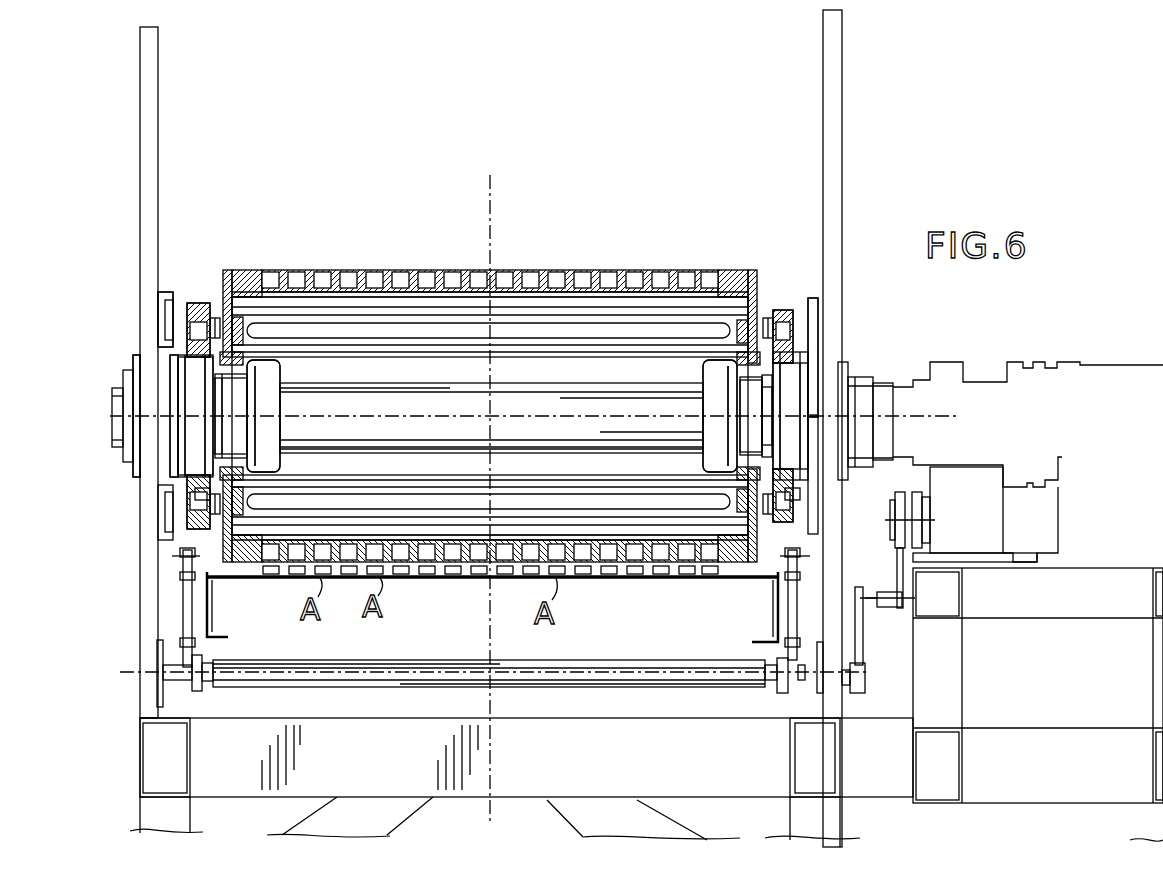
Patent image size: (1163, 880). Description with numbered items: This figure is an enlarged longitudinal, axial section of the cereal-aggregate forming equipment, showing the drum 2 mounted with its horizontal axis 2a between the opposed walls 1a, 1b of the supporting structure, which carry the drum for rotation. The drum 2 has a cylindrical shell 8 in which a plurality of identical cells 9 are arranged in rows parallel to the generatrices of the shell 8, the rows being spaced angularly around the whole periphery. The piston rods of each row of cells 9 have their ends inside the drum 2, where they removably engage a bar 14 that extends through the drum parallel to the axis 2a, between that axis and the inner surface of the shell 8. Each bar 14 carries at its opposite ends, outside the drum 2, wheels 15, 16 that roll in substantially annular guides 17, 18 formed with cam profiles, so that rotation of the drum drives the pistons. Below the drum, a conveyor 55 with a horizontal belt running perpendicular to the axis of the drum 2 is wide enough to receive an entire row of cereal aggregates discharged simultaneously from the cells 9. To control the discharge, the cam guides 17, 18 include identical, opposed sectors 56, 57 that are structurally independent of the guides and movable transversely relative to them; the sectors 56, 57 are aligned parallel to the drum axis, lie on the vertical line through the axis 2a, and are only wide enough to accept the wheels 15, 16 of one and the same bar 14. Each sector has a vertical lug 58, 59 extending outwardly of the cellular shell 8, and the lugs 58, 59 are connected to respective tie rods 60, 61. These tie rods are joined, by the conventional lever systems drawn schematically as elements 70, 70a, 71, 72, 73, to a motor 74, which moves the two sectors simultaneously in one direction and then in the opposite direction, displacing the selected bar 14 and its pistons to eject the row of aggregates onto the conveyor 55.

The opposed wall 1a is at (150, 103).
The opposed wall 1b is at (823, 103).
The drum 2 is at (244, 266).
The horizontal axis 2a is at (540, 418).
The cylindrical shell 8 is at (250, 275).
The cells 9 is at (349, 280).
The bar 14 is at (428, 325).
The wheel 15 is at (205, 302).
The wheel 16 is at (778, 305).
The annular guide 17 is at (190, 300).
The annular guide 18 is at (806, 310).
The conveyor 55 is at (444, 578).
The movable sector 56 is at (197, 497).
The movable sector 57 is at (790, 493).
The vertical lug 58 is at (222, 540).
The vertical lug 59 is at (768, 578).
The tie rod 60 is at (178, 603).
The tie rod 61 is at (790, 612).
The lever system 70 is at (207, 692).
The lever system 70a is at (782, 690).
The lever system 71 is at (577, 690).
The lever system 72 is at (862, 632).
The lever system 73 is at (917, 580).
The motor 74 is at (932, 530).